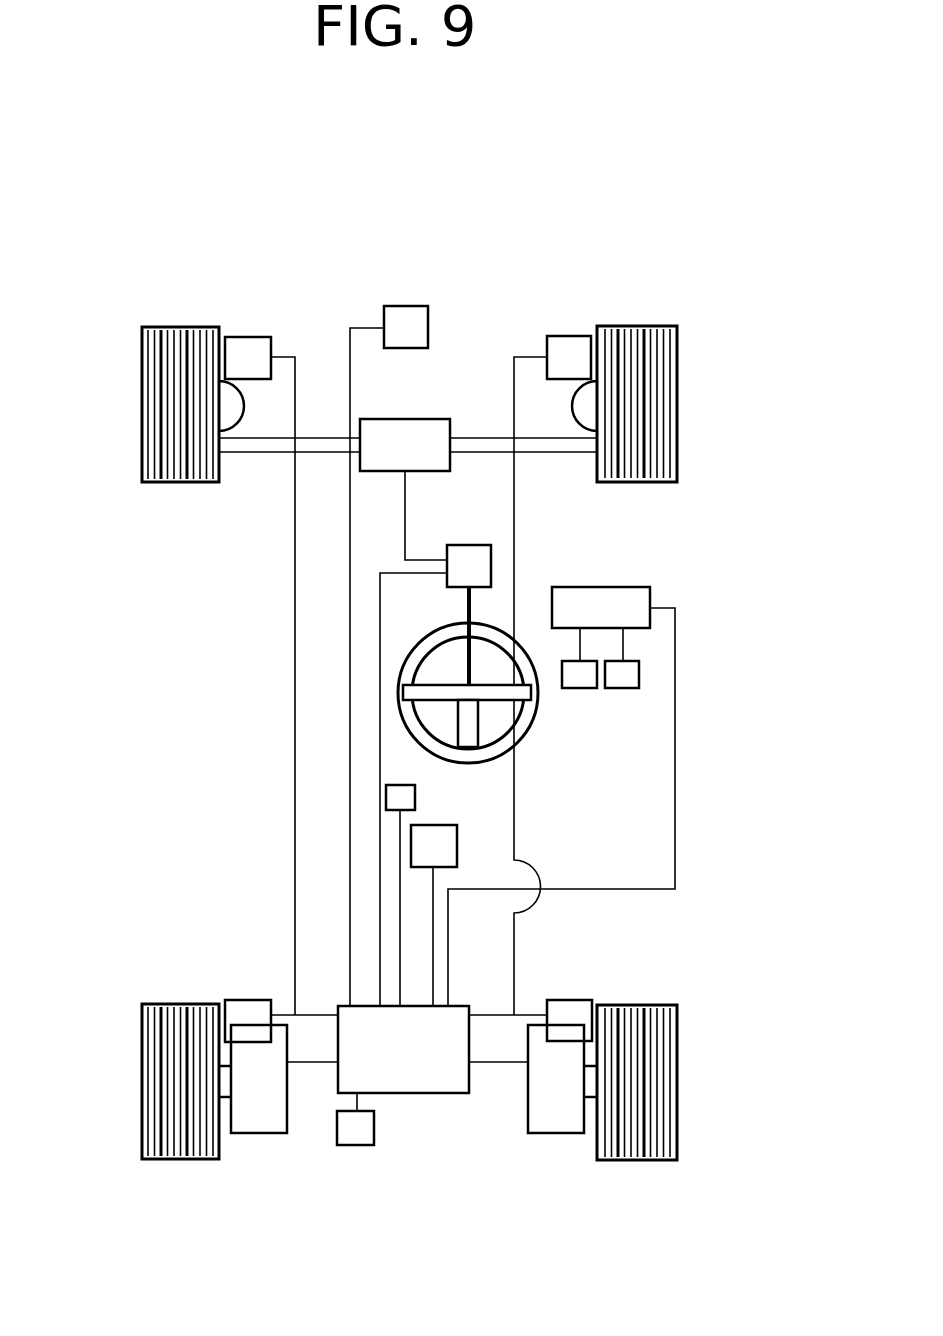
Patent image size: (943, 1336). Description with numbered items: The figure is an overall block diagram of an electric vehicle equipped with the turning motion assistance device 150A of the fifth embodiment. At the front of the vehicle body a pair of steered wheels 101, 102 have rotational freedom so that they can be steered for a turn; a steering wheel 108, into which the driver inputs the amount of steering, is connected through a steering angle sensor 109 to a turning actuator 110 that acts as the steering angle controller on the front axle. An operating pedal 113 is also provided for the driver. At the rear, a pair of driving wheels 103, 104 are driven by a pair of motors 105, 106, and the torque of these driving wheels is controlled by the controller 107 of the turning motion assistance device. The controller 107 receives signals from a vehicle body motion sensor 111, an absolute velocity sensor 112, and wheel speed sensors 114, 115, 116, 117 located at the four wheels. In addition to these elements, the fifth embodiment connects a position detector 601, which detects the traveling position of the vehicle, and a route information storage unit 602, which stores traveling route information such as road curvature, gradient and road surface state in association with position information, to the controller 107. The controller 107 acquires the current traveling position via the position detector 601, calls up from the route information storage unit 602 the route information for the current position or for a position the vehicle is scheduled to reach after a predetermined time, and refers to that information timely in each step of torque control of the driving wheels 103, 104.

The steered wheel 101 is at (142, 362).
The steered wheel 102 is at (677, 355).
The driving wheel 103 is at (142, 1092).
The driving wheel 104 is at (677, 1090).
The motor 105 is at (262, 1133).
The motor 106 is at (560, 1133).
The controller 107 is at (440, 1093).
The steering wheel 108 is at (532, 723).
The steering angle sensor 109 is at (460, 545).
The turning actuator 110 is at (438, 419).
The vehicle body motion sensor 111 is at (457, 836).
The absolute velocity sensor 112 is at (408, 306).
The operating pedal 113 is at (595, 587).
The wheel speed sensor 114 is at (240, 337).
The wheel speed sensor 115 is at (568, 336).
The wheel speed sensor 116 is at (233, 1000).
The wheel speed sensor 117 is at (568, 1000).
The position detector 601 is at (415, 796).
The route information storage unit 602 is at (357, 1150).
The turning motion assistance device 150A is at (449, 1245).